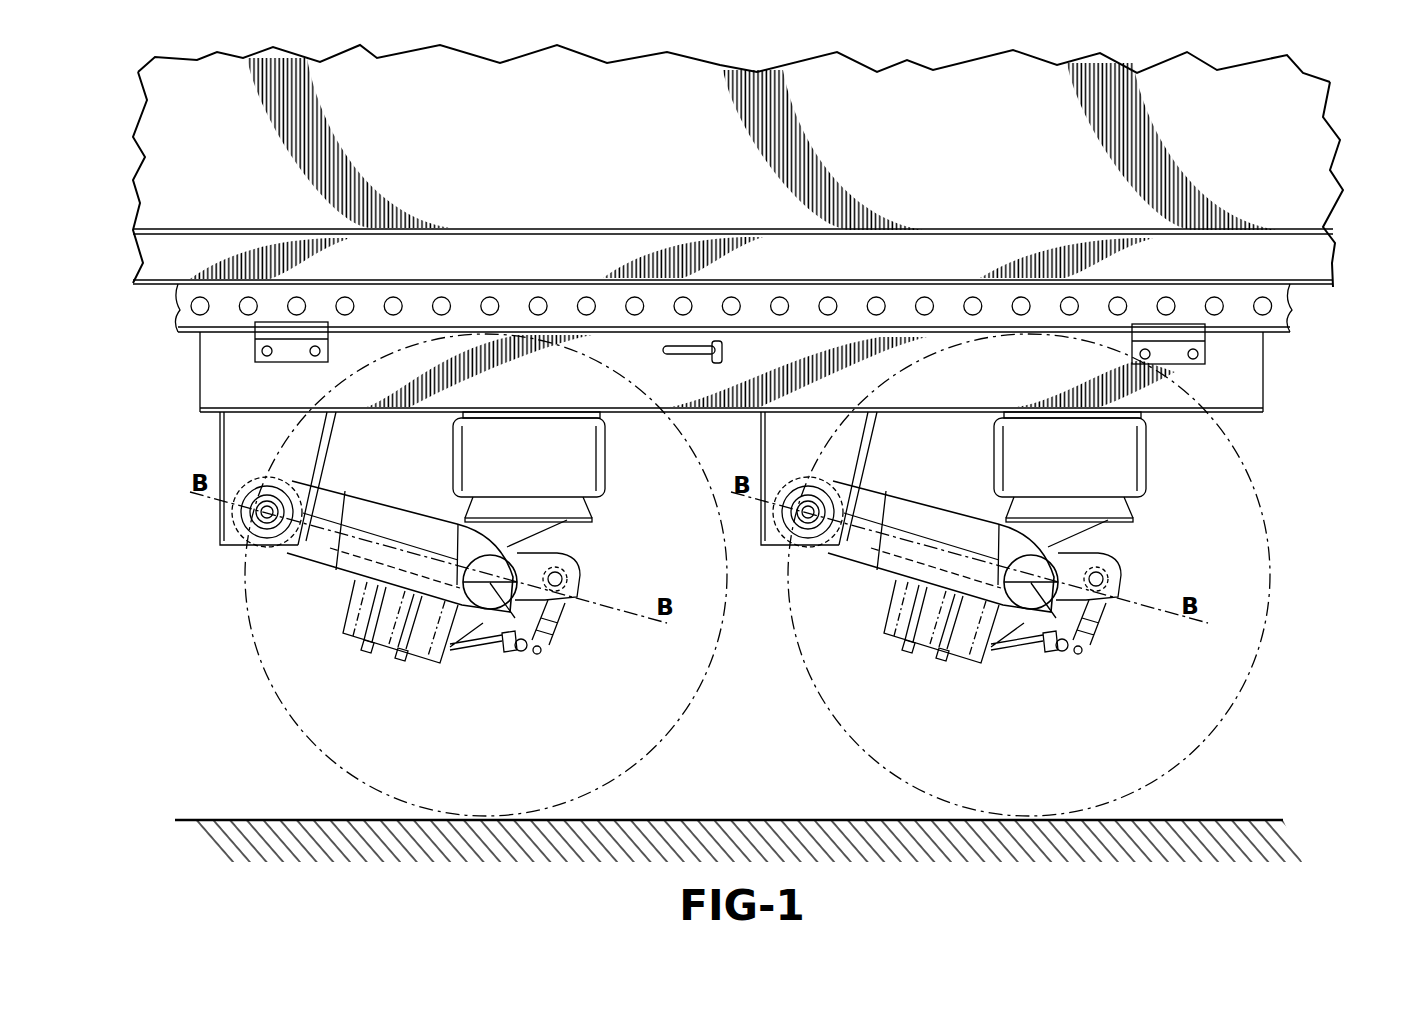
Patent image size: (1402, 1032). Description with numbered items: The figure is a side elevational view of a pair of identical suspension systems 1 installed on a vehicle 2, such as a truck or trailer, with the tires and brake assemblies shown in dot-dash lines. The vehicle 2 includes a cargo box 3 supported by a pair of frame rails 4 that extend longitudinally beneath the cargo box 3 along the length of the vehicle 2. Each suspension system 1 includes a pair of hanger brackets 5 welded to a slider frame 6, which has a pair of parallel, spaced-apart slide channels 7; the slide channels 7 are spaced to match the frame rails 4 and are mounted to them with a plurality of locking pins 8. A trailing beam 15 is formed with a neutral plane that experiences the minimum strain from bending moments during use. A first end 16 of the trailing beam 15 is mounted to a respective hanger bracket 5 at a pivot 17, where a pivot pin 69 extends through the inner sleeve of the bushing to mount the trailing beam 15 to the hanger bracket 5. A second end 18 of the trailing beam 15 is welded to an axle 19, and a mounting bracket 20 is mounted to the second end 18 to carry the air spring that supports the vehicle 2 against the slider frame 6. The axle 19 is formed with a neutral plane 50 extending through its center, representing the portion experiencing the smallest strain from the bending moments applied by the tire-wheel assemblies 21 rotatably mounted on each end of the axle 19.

The suspension system 1 is at (523, 678).
The vehicle 2 is at (1338, 235).
The cargo box 3 is at (1290, 116).
The frame rails 4 is at (1283, 303).
The hanger bracket 5 is at (233, 548).
The slider frame 6 is at (1263, 391).
The slide channels 7 is at (1250, 365).
The locking pins 8 is at (243, 313).
The trailing beam 15 is at (355, 492).
The first end 16 is at (292, 470).
The pivot 17 is at (803, 520).
The second end 18 is at (507, 543).
The axle 19 is at (483, 597).
The mounting bracket 20 is at (556, 532).
The tire-wheel assembly 21 is at (306, 748).
The neutral plane 50 is at (542, 647).
The pivot pin 69 is at (268, 522).